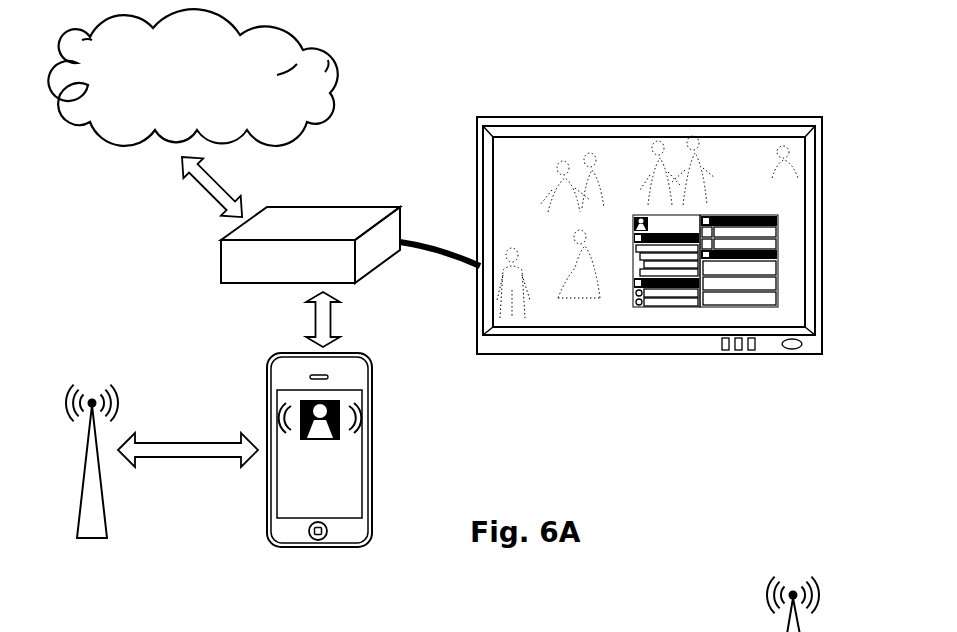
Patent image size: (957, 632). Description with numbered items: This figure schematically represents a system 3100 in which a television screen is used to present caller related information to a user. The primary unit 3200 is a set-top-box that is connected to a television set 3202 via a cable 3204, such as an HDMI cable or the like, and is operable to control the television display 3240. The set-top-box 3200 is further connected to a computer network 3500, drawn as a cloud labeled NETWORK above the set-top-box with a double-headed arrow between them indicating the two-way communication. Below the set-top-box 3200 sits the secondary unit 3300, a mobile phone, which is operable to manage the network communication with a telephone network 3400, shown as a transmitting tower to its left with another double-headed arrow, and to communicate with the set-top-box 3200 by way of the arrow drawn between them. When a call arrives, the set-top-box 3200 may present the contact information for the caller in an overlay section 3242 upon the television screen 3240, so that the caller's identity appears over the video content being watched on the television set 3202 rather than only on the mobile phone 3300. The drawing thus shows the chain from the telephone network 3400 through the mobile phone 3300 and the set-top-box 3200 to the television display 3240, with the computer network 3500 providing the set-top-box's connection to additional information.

The content distribution system 3100 is at (724, 58).
The primary unit 3200 is at (335, 207).
The television set 3202 is at (817, 280).
The cable 3204 is at (420, 237).
The television screen 3240 is at (550, 155).
The overlay section 3242 is at (666, 313).
The secondary unit 3300 is at (267, 395).
The telephone network 3400 is at (100, 515).
The computer network 3500 is at (325, 72).